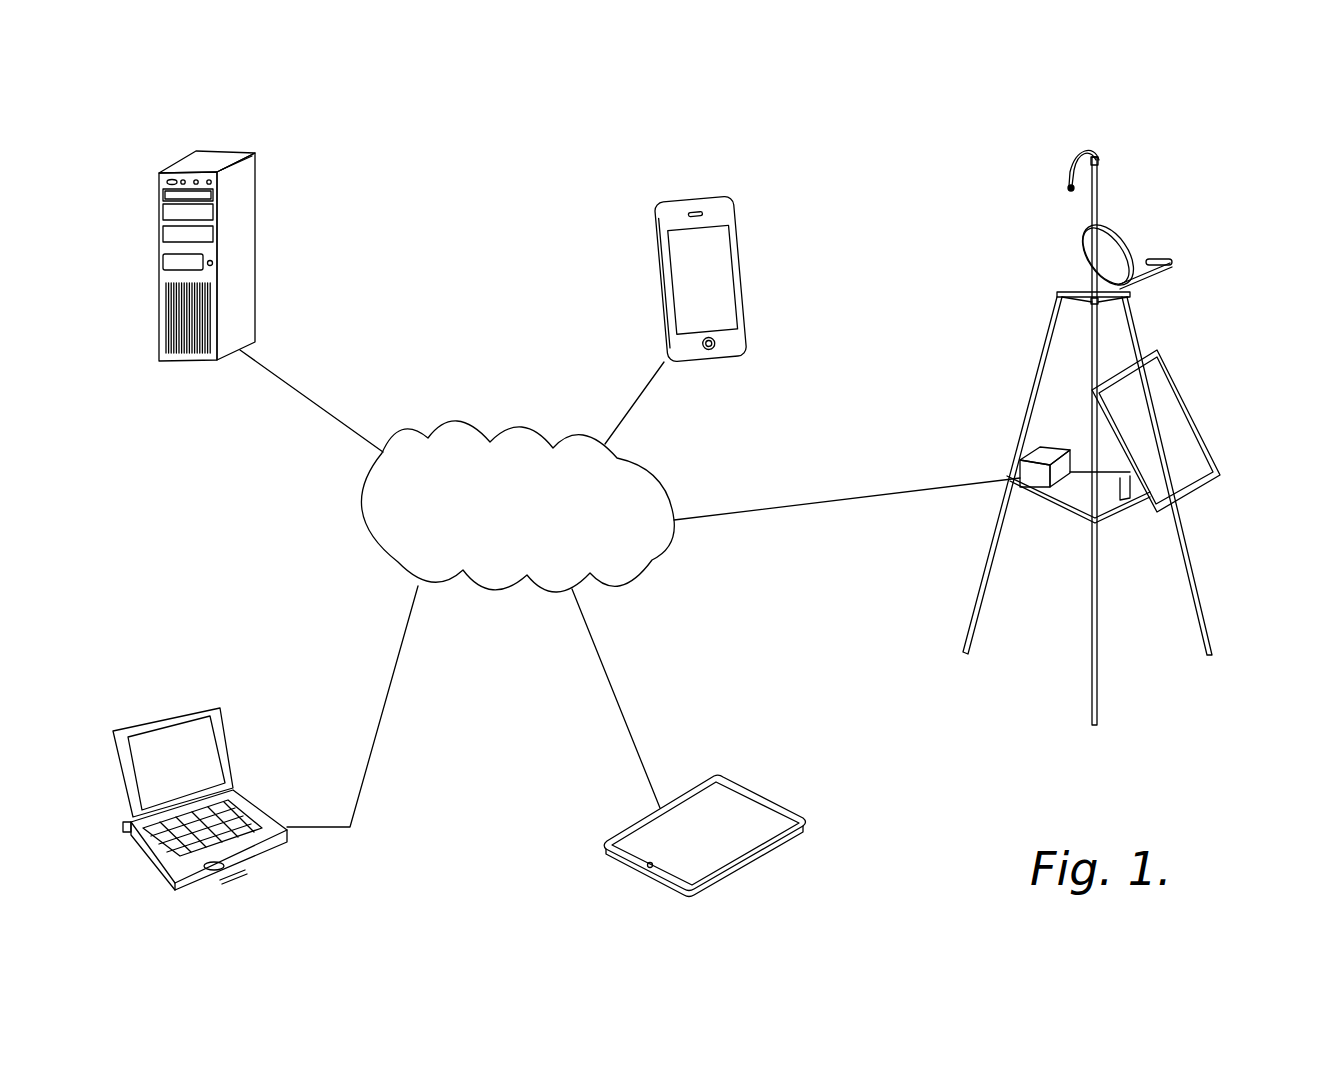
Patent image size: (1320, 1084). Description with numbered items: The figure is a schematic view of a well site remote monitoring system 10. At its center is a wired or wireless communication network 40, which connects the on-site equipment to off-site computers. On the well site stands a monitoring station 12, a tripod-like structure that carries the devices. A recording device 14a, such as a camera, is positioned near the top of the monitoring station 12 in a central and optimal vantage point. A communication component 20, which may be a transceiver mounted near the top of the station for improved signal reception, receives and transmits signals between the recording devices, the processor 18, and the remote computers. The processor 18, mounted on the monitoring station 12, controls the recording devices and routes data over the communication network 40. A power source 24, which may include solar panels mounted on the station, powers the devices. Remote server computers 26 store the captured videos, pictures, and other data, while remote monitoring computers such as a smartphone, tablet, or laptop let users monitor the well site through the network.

The well site remote monitoring system 10 is at (886, 187).
The monitoring station 12 is at (1171, 190).
The recording device 14a is at (1064, 216).
The processor 18 is at (1046, 455).
The communication component 20 is at (1193, 245).
The power source 24 is at (1201, 405).
The remote server computers 26 is at (271, 228).
The communication network 40 is at (527, 512).